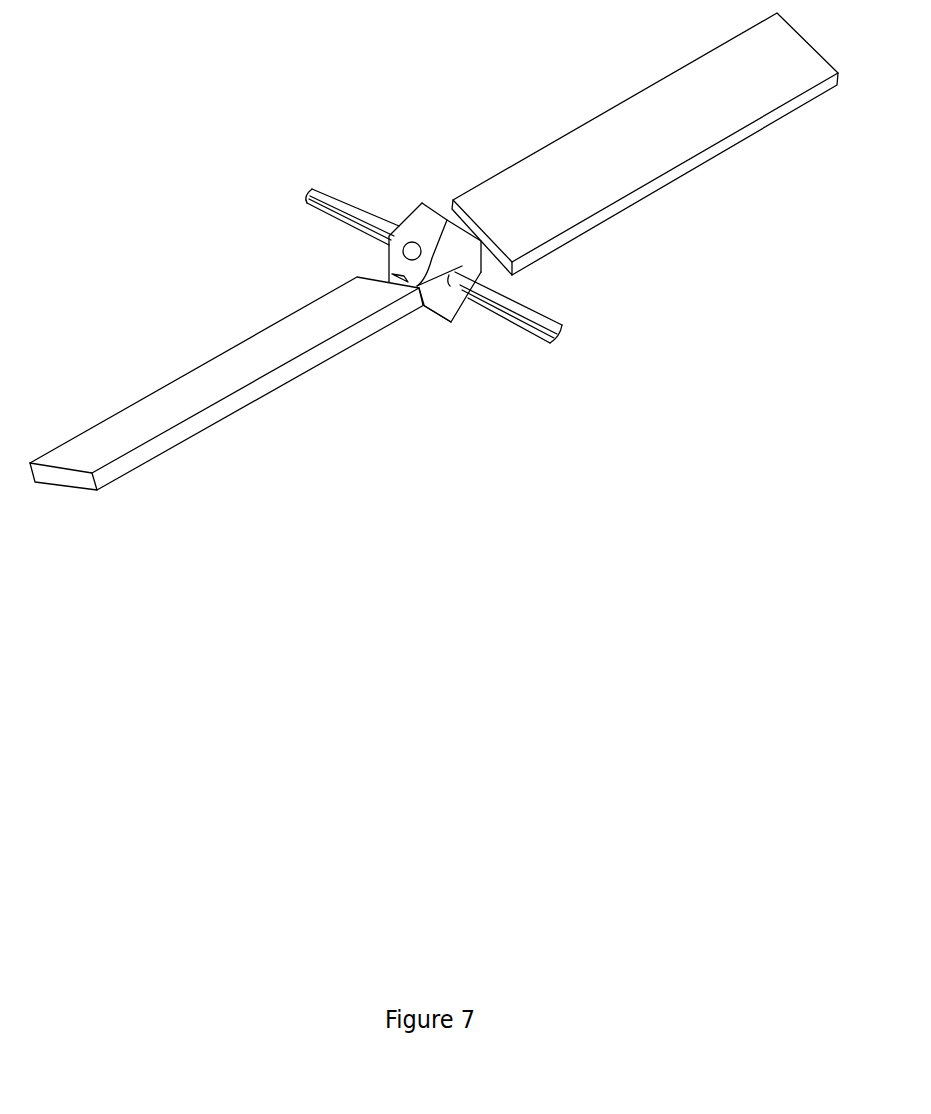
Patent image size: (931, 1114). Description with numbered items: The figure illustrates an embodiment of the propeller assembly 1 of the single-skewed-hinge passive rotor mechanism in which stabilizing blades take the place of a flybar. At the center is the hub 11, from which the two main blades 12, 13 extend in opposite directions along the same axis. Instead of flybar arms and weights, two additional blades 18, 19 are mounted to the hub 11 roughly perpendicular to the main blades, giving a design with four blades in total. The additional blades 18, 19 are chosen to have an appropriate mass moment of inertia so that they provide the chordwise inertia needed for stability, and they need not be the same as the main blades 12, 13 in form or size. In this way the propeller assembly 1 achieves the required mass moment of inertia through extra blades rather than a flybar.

The propeller assembly 1 is at (376, 262).
The hub 11 is at (434, 320).
The blade 12 is at (230, 350).
The blade 13 is at (636, 95).
The blade 18 is at (547, 313).
The blade 19 is at (339, 196).